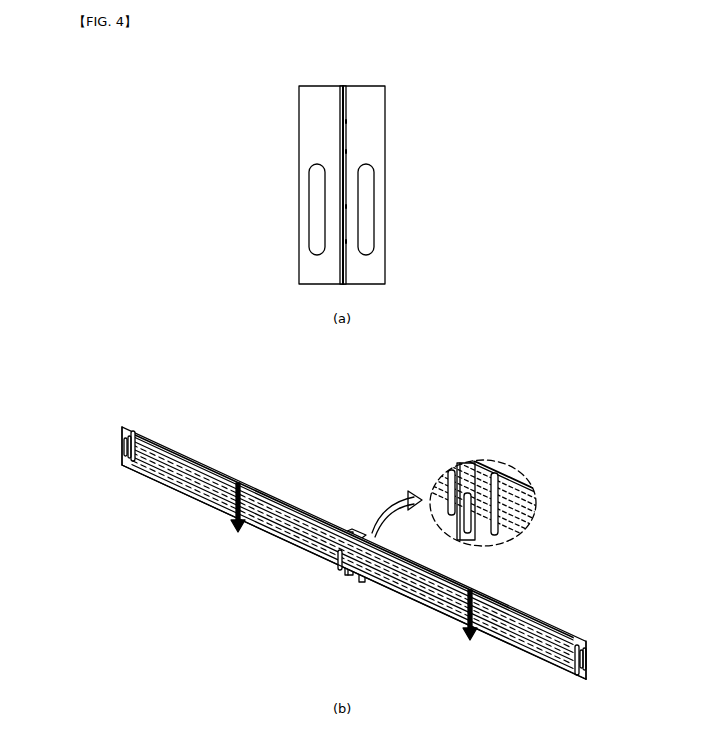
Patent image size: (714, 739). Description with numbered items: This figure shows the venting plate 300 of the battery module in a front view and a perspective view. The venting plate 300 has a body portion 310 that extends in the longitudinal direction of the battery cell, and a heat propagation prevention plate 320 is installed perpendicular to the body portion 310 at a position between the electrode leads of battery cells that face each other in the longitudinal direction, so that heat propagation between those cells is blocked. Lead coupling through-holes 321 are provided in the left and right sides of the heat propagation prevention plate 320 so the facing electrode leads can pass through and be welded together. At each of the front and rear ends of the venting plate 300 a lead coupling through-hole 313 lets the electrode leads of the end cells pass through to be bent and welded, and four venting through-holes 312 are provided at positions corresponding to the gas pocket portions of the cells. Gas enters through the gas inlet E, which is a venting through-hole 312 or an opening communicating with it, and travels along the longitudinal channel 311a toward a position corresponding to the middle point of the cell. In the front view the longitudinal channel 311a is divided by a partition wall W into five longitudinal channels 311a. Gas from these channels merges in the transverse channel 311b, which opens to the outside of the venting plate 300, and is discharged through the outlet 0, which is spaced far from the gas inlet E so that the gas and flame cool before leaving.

The venting plate 300 is at (597, 424).
The body portion 310 is at (340, 96).
The longitudinal channel 311a is at (340, 147).
The transverse channel 311b is at (228, 508).
The venting through-hole 312 is at (133, 430).
The lead coupling through-hole 313 is at (122, 446).
The heat propagation prevention plate 320 is at (304, 125).
The lead coupling through-hole 321 is at (316, 208).
The partition wall W is at (344, 128).
The outlet 0 is at (241, 533).
The gas inlet E is at (578, 670).